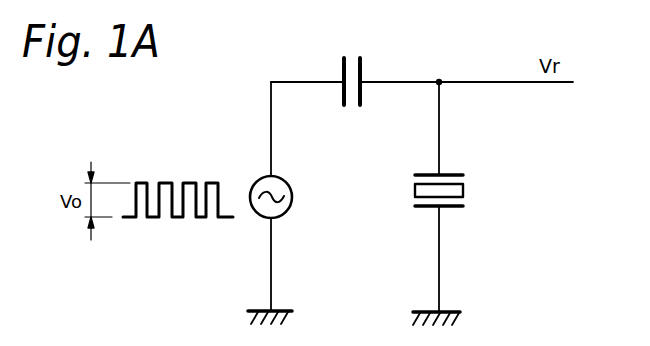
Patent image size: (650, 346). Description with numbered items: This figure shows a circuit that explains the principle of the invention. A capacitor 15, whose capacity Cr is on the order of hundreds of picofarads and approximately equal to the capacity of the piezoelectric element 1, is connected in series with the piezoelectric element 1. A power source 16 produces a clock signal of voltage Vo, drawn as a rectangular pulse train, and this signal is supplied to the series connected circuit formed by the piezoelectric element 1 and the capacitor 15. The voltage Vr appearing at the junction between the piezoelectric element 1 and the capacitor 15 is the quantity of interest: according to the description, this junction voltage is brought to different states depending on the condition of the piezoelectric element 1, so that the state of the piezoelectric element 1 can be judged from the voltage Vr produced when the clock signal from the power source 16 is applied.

The capacitor 15 is at (350, 57).
The power source 16 is at (264, 176).
The piezoelectric element 1 is at (463, 190).